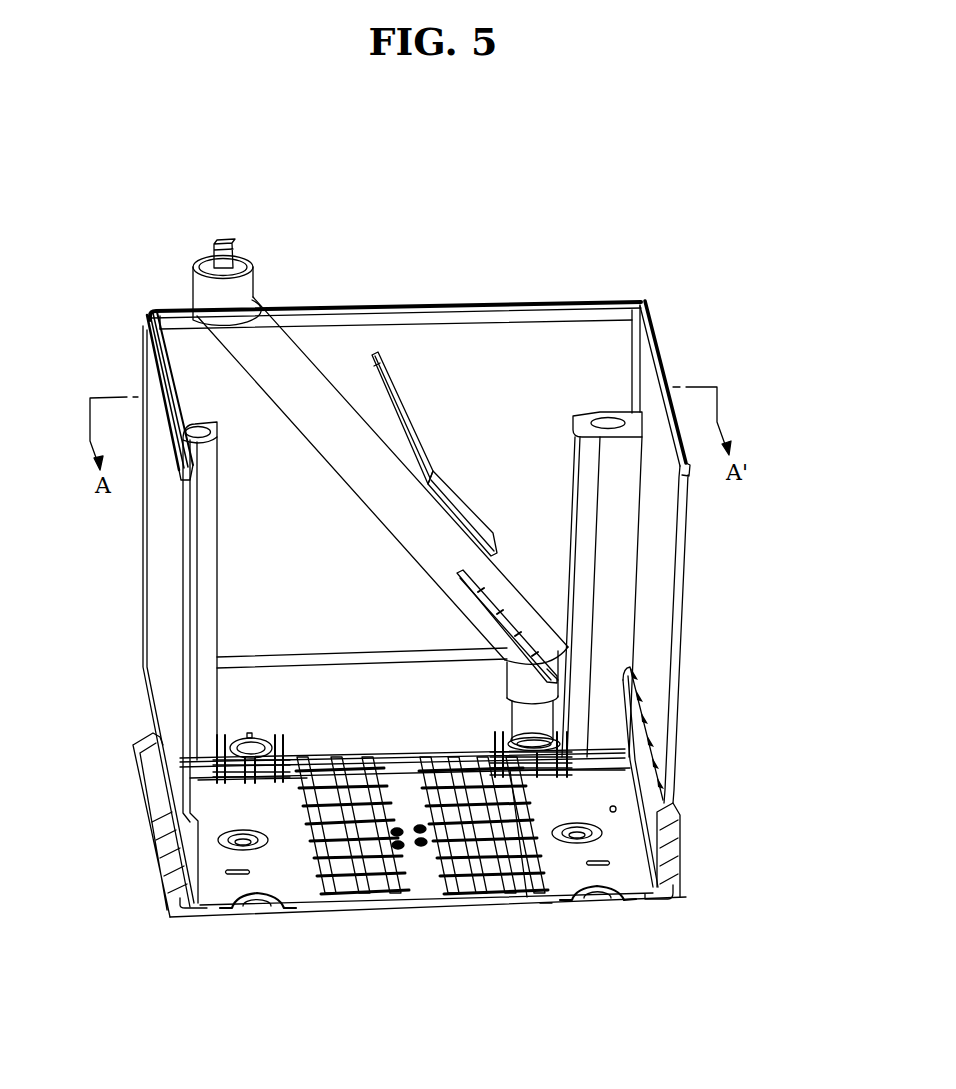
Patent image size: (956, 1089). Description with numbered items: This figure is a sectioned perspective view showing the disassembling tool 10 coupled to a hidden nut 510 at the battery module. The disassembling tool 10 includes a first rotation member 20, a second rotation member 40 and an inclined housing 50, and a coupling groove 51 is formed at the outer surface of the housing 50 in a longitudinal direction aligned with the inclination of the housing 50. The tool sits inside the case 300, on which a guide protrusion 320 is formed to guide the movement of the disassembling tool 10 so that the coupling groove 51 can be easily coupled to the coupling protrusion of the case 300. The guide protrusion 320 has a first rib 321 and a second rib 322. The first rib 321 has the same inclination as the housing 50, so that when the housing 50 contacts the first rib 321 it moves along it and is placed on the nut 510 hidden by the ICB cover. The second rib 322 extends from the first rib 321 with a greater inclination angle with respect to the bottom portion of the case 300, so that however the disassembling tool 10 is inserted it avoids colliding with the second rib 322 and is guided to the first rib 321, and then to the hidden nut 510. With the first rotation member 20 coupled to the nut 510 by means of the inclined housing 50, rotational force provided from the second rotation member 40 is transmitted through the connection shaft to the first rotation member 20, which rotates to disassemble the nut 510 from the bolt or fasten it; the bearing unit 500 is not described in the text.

The disassembling tool 10 is at (180, 256).
The second rotation member 40 is at (226, 246).
The housing 50 is at (313, 433).
The coupling groove 51 is at (470, 592).
The first rotation member 20 is at (520, 715).
The case 300 is at (680, 588).
The guide protrusion 320 is at (488, 422).
The first rib 321 is at (467, 501).
The second rib 322 is at (404, 410).
The left bearing unit 500 is at (258, 736).
The nut 510 is at (505, 743).